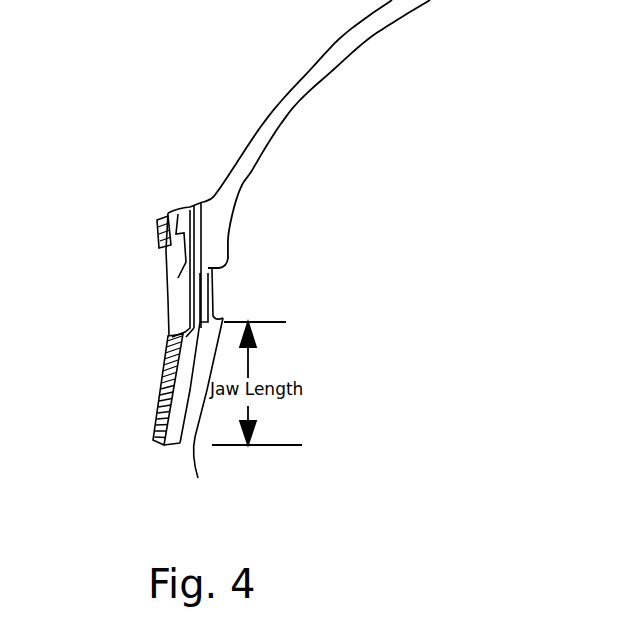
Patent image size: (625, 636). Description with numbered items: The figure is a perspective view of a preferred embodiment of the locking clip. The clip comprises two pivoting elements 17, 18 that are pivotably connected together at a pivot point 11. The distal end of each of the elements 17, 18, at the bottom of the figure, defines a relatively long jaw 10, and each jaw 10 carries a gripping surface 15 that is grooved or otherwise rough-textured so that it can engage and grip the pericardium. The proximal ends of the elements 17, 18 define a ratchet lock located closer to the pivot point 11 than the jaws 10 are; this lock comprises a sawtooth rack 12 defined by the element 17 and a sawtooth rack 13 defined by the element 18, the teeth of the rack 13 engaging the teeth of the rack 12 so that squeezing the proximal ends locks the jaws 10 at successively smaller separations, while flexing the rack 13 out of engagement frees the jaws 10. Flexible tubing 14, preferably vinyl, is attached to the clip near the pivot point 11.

The jaw 10 is at (168, 374).
The pivot point 11 is at (158, 301).
The sawtooth rack 12 is at (146, 240).
The sawtooth rack 13 is at (188, 210).
The flexible tubing 14 is at (312, 118).
The gripping surface 15 is at (175, 349).
The pivoting element 17 is at (222, 317).
The pivoting element 18 is at (196, 250).